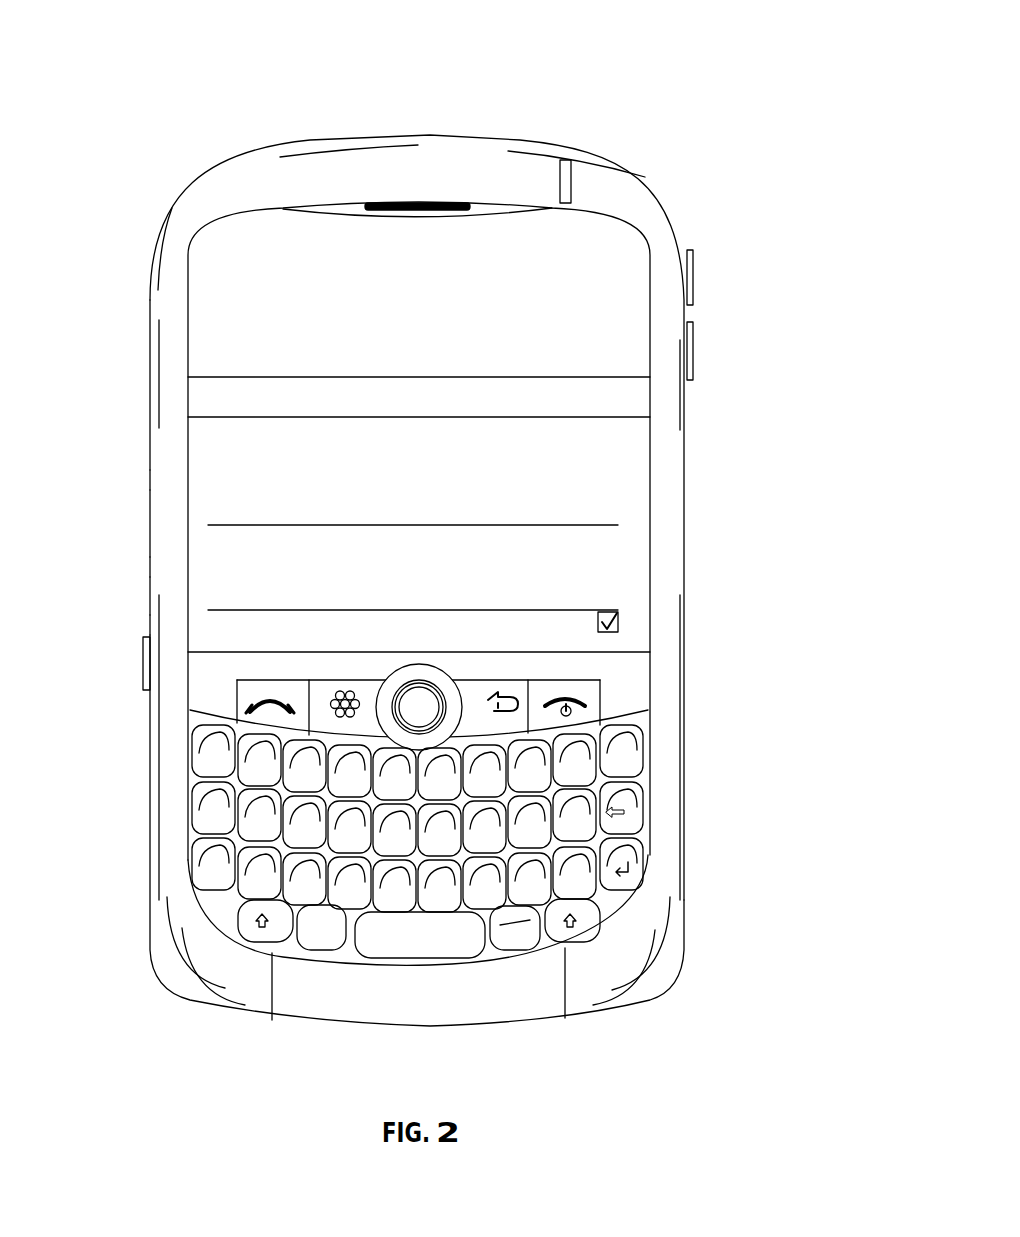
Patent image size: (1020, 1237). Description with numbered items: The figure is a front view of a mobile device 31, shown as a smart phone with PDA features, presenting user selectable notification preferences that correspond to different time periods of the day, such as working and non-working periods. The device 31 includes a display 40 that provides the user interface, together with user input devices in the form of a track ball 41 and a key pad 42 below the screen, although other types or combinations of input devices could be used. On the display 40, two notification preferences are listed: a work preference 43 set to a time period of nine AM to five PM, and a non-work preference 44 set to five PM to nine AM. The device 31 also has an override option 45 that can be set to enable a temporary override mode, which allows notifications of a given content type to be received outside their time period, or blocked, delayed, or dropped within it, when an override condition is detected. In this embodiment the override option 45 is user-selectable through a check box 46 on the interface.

The mobile device 31 is at (708, 43).
The display 40 is at (651, 523).
The track ball 41 is at (437, 692).
The key pad 42 is at (646, 797).
The work preference 43 is at (140, 480).
The non-work preference 44 is at (140, 567).
The override option 45 is at (140, 625).
The check box 46 is at (618, 622).